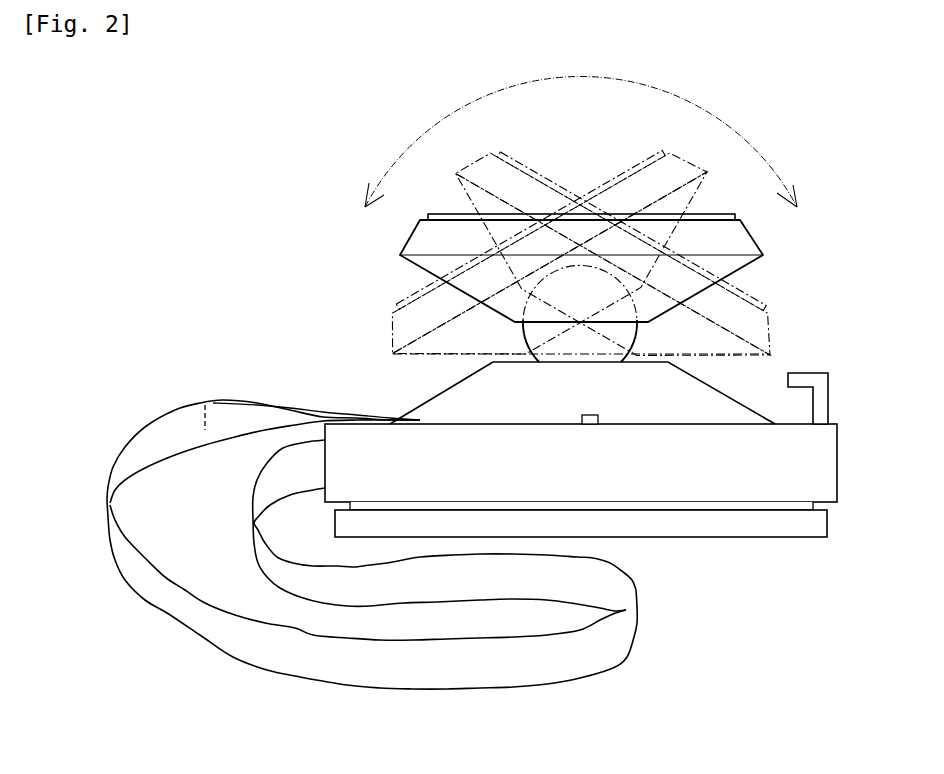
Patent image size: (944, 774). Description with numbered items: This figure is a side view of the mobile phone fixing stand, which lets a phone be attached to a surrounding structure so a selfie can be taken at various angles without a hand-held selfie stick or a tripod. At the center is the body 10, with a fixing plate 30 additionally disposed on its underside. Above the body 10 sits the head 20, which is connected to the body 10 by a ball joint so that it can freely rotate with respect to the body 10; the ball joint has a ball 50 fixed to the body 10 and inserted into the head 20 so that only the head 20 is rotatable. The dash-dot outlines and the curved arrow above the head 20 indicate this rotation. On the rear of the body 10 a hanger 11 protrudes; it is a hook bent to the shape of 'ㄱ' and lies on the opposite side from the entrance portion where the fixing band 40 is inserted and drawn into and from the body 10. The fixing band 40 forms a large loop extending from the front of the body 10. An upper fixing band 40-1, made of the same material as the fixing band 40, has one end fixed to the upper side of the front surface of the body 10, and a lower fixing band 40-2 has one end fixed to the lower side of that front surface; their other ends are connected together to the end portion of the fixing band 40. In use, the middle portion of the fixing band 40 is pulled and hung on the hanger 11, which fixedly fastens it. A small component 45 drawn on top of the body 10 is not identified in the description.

The body 10 is at (830, 460).
The hanger 11 is at (823, 398).
The head 20 is at (747, 240).
The fixing plate 30 is at (822, 523).
The fixing band 40 is at (462, 680).
The upper fixing band 40-1 is at (218, 413).
The lower fixing band 40-2 is at (317, 402).
The sensor 45 is at (590, 413).
The ball 50 is at (597, 350).